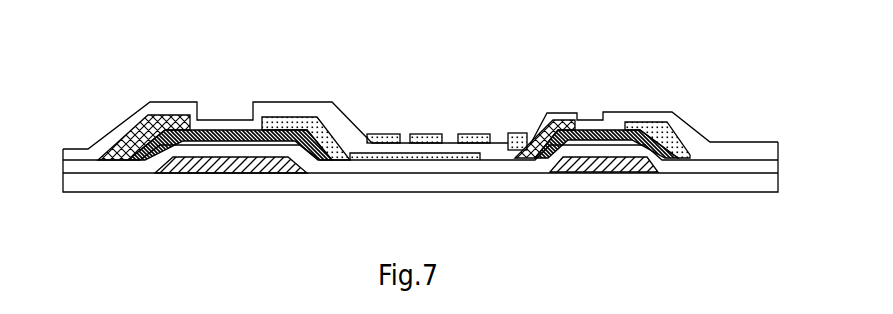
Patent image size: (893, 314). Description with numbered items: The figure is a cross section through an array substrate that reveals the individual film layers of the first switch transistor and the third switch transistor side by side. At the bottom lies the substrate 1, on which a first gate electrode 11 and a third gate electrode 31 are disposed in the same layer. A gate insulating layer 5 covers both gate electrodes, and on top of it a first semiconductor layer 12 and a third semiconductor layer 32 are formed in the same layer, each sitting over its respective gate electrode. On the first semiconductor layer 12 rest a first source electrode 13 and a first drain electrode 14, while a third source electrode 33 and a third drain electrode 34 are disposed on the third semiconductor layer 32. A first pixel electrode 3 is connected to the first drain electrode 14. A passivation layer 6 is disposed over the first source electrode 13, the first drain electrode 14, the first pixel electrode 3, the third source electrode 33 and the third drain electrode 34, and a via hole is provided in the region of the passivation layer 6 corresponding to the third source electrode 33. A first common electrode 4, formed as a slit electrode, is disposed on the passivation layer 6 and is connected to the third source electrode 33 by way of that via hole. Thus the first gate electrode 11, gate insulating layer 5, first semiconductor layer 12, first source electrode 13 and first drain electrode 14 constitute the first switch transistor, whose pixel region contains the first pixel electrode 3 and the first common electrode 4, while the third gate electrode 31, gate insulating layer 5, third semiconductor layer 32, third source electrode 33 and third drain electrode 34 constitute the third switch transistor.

The substrate 1 is at (727, 180).
The first pixel electrode 3 is at (511, 133).
The first common electrode 4 is at (474, 134).
The gate insulating layer 5 is at (357, 167).
The passivation layer 6 is at (622, 122).
The first gate electrode 11 is at (228, 160).
The first semiconductor layer 12 is at (212, 133).
The first source electrode 13 is at (143, 125).
The first drain electrode 14 is at (316, 122).
The third gate electrode 31 is at (595, 165).
The third semiconductor layer 32 is at (640, 147).
The third source electrode 33 is at (562, 130).
The third drain electrode 34 is at (668, 120).